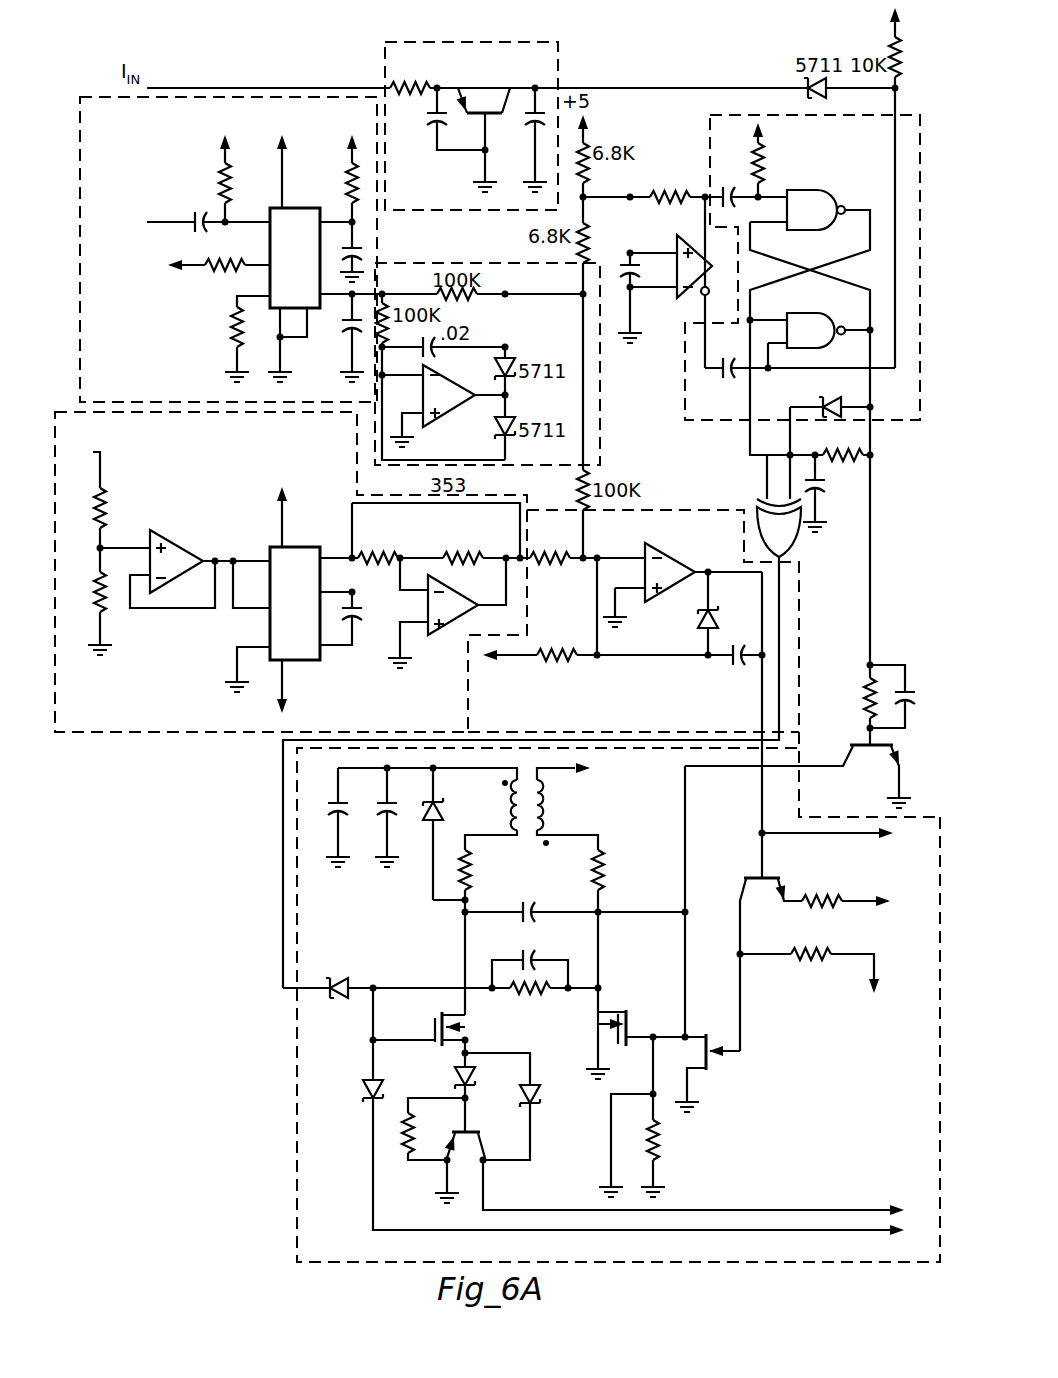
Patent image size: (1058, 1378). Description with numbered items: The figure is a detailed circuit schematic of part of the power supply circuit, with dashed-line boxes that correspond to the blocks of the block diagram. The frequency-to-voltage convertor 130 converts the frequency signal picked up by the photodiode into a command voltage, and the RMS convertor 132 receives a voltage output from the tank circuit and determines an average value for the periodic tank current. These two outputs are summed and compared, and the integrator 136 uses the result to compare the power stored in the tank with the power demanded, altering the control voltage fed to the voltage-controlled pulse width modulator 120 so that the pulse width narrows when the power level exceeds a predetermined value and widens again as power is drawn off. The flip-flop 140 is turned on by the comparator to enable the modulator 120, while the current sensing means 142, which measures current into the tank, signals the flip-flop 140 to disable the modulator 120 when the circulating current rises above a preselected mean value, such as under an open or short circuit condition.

The voltage-controlled pulse width modulator 120 is at (297, 1073).
The frequency-to-voltage convertor 130 is at (111, 97).
The RMS convertor 132 is at (176, 735).
The integrator 136 is at (800, 592).
The flip-flop 140 is at (710, 128).
The current sensing means 142 is at (558, 64).